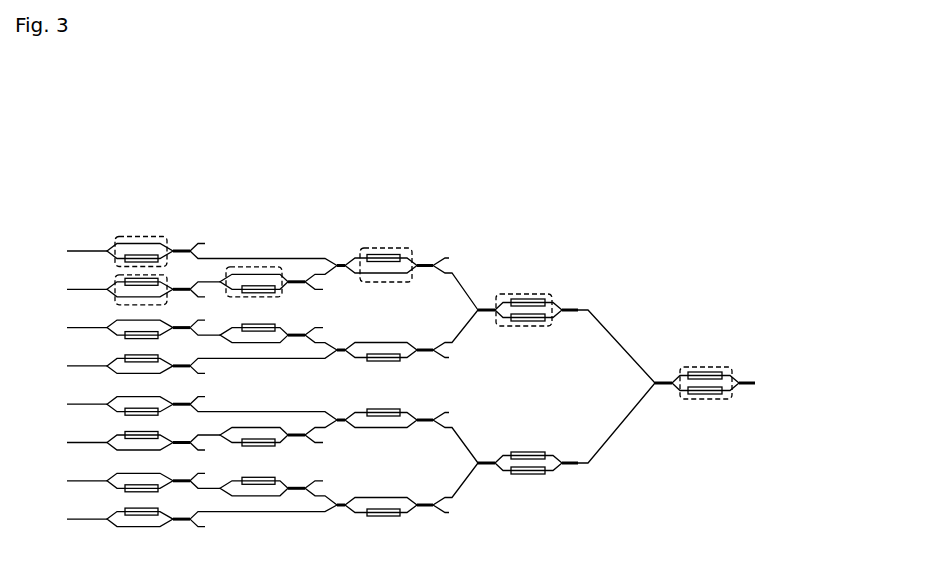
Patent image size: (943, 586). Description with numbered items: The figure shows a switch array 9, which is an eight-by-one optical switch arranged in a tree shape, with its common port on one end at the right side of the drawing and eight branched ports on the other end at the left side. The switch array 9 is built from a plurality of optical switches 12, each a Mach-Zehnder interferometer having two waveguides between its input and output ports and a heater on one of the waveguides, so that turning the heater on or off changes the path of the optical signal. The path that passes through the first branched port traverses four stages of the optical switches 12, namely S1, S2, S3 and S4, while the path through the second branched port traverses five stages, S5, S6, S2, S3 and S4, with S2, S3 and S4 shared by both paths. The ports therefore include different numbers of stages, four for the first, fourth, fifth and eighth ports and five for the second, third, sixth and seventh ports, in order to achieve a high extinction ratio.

The switch array 9 is at (351, 140).
The optical switch 12 is at (398, 251).
The optical switch S1 is at (134, 237).
The optical switch S2 is at (407, 241).
The optical switch S3 is at (527, 292).
The optical switch S4 is at (708, 367).
The optical switch S5 is at (167, 282).
The optical switch S6 is at (263, 268).